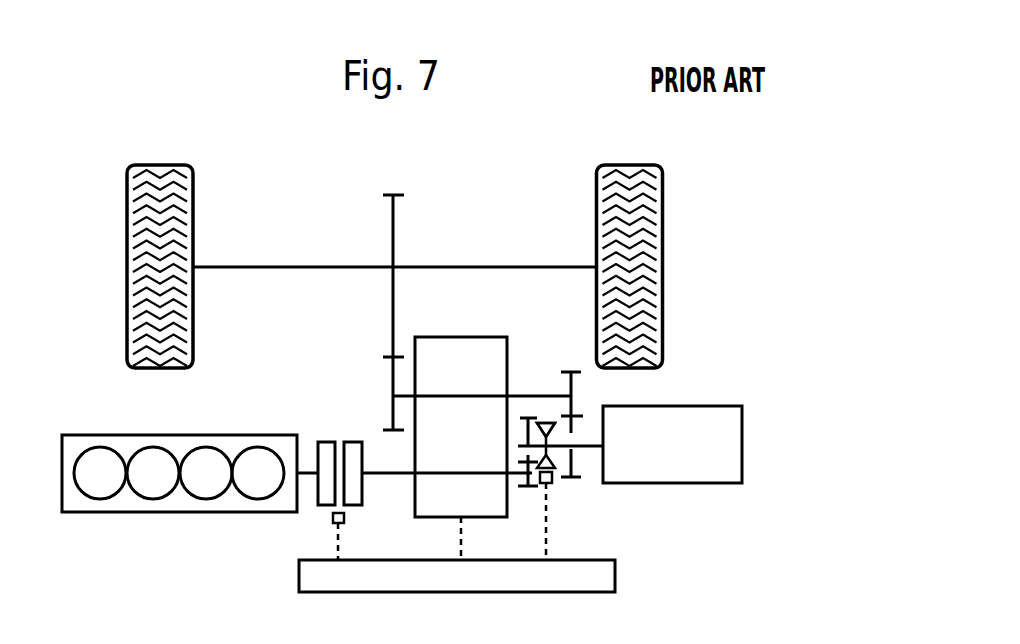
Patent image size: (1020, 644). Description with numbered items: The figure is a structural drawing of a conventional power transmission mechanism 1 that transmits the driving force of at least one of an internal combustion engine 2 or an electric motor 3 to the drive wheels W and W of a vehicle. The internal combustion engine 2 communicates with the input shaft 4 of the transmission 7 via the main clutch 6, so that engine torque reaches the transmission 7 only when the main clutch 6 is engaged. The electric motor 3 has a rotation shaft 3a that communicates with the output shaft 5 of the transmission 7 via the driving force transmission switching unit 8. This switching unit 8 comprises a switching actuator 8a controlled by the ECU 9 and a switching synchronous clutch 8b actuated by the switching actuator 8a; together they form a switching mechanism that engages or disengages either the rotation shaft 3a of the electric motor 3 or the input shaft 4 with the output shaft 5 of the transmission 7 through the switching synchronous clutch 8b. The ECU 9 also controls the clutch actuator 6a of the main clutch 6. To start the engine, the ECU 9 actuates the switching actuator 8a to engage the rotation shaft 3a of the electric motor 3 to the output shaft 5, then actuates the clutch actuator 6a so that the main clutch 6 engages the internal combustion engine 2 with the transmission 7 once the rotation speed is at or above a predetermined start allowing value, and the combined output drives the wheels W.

The power transmission mechanism 1 is at (507, 168).
The internal combustion engine 2 is at (80, 435).
The electric motor 3 is at (718, 406).
The rotation shaft 3a is at (591, 448).
The input shaft 4 is at (483, 471).
The output shaft 5 is at (440, 398).
The main clutch 6 is at (341, 428).
The clutch actuator 6a is at (345, 518).
The transmission 7 is at (483, 337).
The driving force transmission switching unit 8 is at (536, 492).
The switching actuator 8a is at (549, 483).
The switching synchronous clutch 8b is at (545, 422).
The ECU 9 is at (615, 572).
The drive wheels W is at (395, 253).